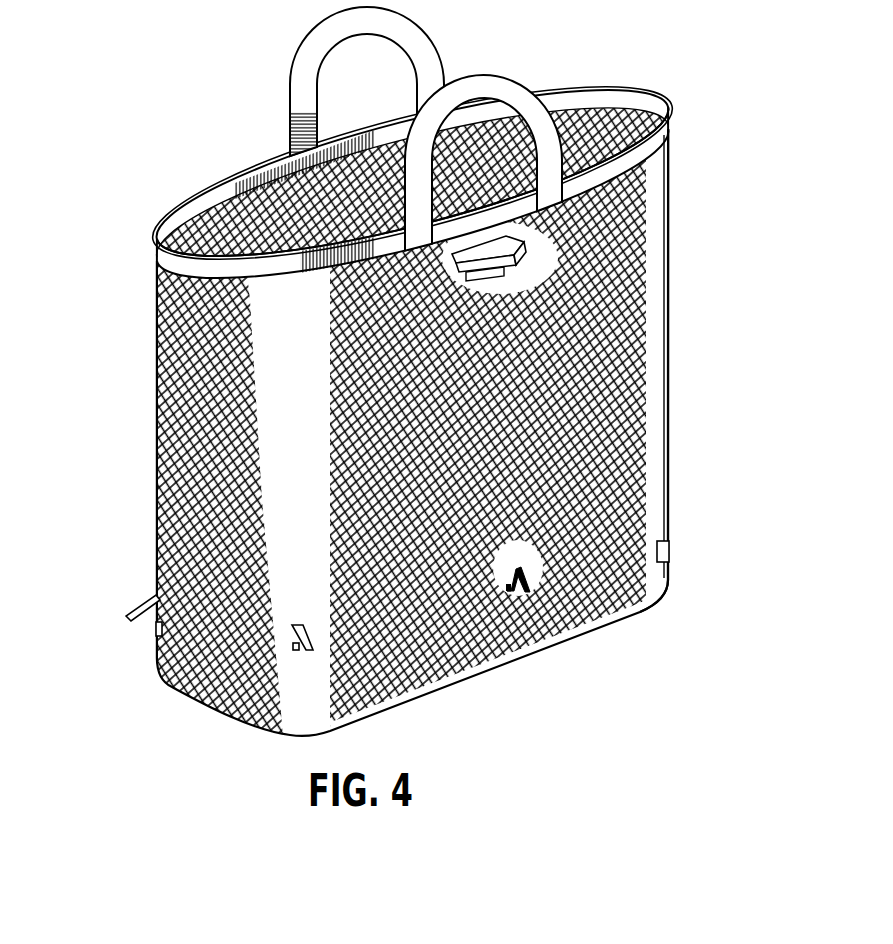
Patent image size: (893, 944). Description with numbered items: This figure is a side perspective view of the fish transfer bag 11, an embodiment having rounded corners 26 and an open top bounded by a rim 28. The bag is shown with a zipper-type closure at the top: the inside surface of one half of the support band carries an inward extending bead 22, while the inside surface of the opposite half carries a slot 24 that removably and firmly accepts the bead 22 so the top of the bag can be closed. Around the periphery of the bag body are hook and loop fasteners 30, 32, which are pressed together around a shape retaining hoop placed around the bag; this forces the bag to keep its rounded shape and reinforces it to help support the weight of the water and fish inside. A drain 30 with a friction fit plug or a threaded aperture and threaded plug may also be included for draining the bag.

The bag 11 is at (667, 434).
The inward extending bead 22 is at (617, 94).
The slot 24 is at (663, 113).
The rounded corners 26 is at (540, 215).
The rim 28 is at (500, 265).
The hook and loop fasteners 30 is at (670, 553).
The hook and loop fasteners 32 is at (157, 627).